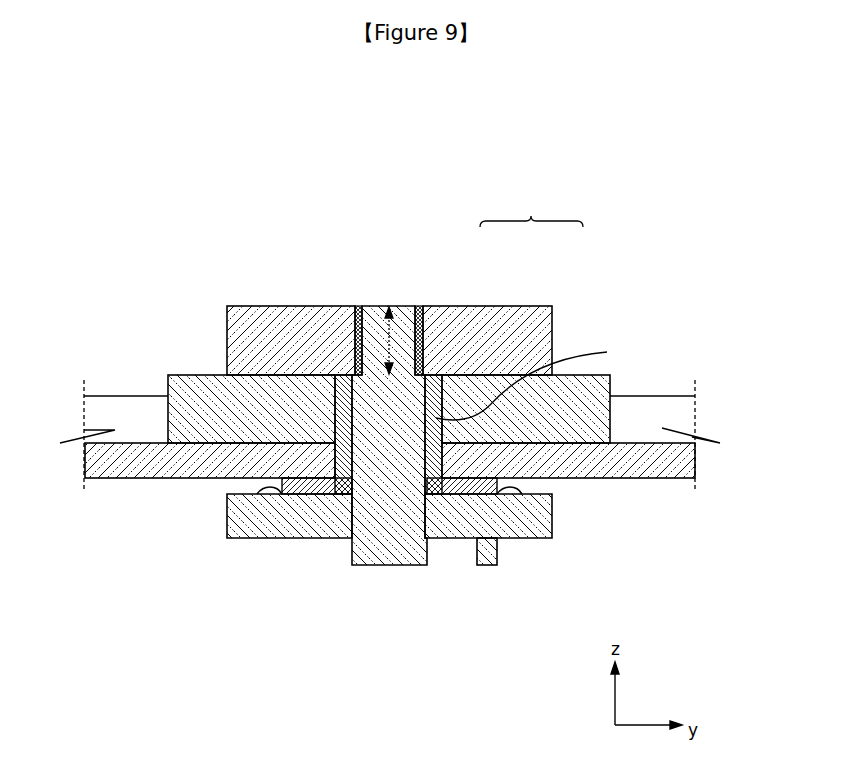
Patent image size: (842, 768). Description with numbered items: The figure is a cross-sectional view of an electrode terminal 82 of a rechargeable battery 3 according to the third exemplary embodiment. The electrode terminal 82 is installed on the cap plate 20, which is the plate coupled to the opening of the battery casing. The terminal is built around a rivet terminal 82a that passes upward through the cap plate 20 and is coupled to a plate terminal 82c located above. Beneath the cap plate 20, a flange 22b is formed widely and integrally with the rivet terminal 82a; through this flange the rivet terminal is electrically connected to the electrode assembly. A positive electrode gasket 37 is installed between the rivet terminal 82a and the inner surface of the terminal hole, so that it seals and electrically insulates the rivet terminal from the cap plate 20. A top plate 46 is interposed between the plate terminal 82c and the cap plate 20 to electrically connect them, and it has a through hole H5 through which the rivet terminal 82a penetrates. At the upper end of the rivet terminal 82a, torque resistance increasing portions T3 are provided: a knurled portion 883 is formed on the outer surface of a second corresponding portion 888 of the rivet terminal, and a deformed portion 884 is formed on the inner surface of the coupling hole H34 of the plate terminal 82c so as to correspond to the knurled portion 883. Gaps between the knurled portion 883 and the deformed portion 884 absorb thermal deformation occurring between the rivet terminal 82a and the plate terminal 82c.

The rechargeable battery 3 is at (400, 119).
The electrode terminal 82 is at (259, 266).
The rivet terminal 82a is at (380, 566).
The plate terminal 82c is at (228, 320).
The flange 22b is at (545, 539).
The positive electrode gasket 37 is at (298, 496).
The top plate 46 is at (170, 380).
The cap plate 20 is at (676, 463).
The second corresponding portion 888 is at (405, 318).
The knurled portion 883 is at (420, 330).
The deformed portion 884 is at (423, 348).
The torque resistance increasing portions T3 is at (531, 210).
The coupling hole H34 is at (381, 304).
The through hole H5 is at (535, 381).